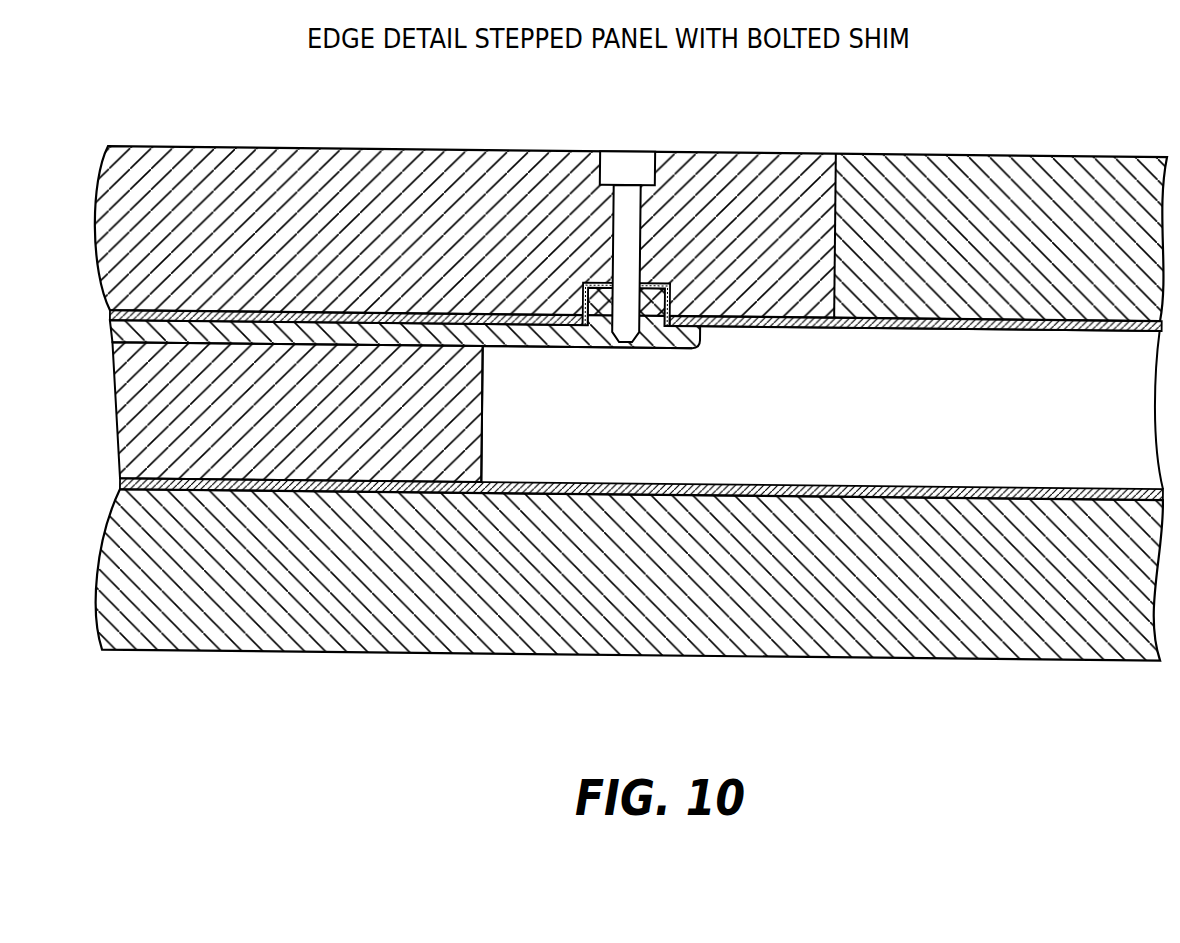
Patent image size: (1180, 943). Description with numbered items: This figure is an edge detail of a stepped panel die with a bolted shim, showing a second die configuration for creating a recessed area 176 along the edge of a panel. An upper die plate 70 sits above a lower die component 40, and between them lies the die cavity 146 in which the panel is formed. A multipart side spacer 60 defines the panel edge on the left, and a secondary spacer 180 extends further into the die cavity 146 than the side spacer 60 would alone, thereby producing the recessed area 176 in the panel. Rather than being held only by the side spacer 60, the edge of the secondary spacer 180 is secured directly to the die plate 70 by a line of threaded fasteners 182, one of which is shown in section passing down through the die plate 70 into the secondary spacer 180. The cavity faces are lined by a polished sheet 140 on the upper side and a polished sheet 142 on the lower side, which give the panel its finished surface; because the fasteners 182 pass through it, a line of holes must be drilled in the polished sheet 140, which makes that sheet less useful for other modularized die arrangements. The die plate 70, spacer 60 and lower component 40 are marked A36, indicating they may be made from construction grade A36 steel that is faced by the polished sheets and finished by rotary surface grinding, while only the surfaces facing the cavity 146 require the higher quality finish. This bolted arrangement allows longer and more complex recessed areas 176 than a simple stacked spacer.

The lower panel 40 is at (811, 623).
The side spacer 60 is at (190, 402).
The die plate 70 is at (752, 170).
The polished sheet 140 is at (1007, 331).
The shim 142 is at (1001, 490).
The die cavity 146 is at (983, 419).
The recessed area 176 is at (608, 433).
The secondary spacer 180 is at (703, 340).
The threaded fasteners 182 is at (624, 175).
The A36 steel A36 is at (291, 148).